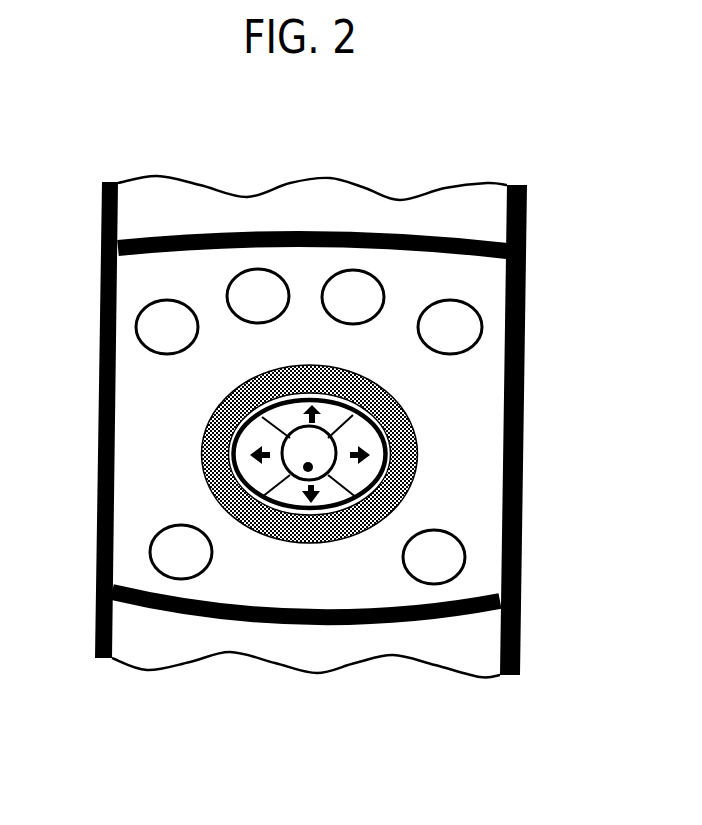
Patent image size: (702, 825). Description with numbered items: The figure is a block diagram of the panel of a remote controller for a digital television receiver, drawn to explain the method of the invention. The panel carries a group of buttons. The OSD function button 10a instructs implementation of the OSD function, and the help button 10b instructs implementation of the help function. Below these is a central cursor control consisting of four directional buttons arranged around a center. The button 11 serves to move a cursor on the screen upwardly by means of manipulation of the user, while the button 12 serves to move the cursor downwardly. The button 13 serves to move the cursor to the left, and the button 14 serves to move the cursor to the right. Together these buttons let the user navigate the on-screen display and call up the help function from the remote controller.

The OSD function button 10a is at (357, 270).
The help button 10b is at (482, 327).
The button 11 is at (342, 403).
The button 12 is at (285, 497).
The button 13 is at (265, 430).
The button 14 is at (367, 473).